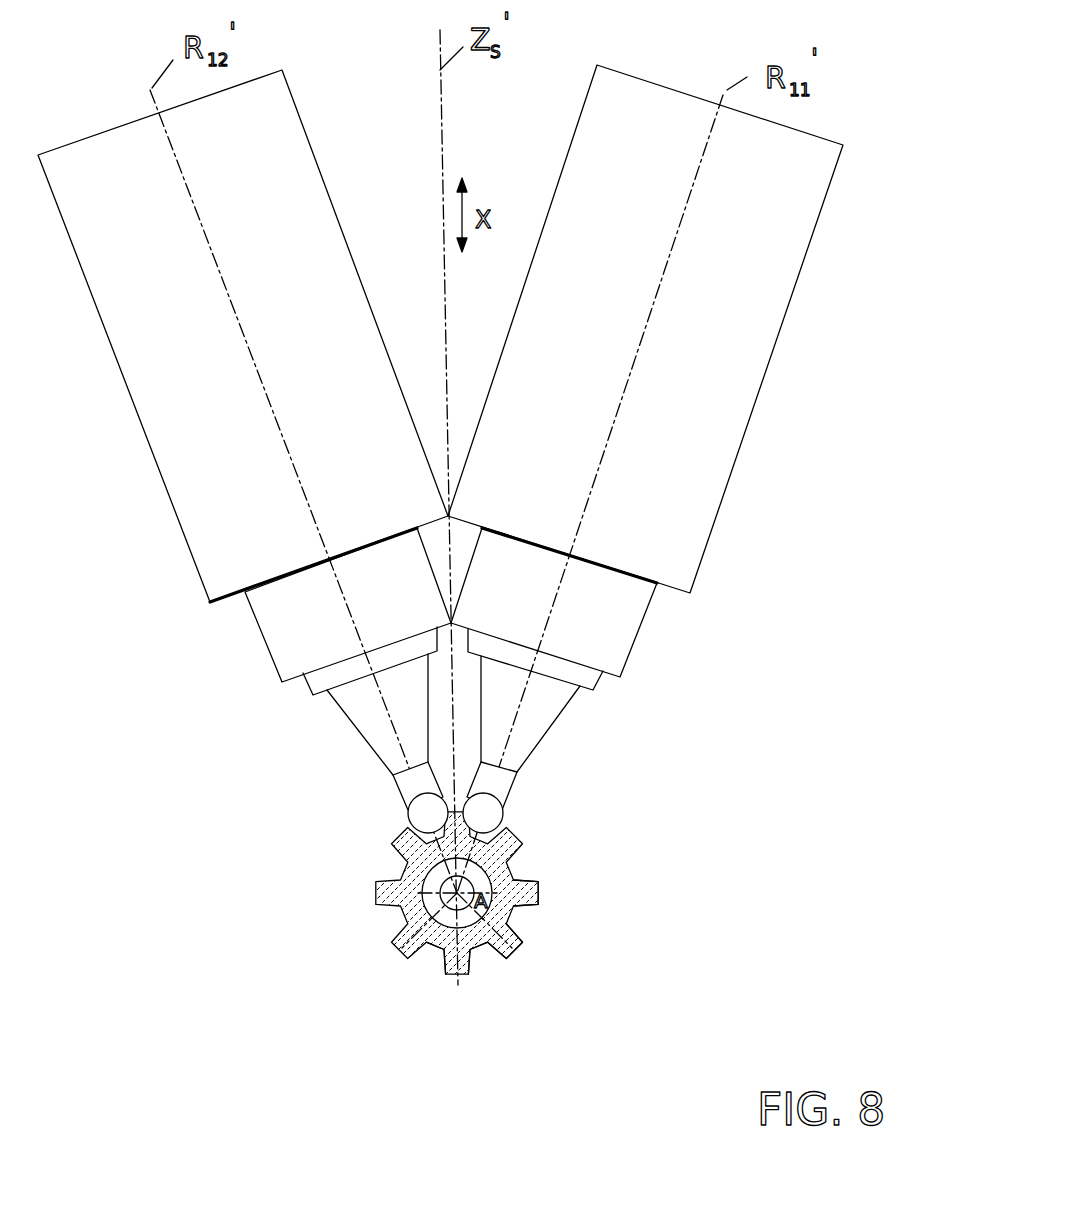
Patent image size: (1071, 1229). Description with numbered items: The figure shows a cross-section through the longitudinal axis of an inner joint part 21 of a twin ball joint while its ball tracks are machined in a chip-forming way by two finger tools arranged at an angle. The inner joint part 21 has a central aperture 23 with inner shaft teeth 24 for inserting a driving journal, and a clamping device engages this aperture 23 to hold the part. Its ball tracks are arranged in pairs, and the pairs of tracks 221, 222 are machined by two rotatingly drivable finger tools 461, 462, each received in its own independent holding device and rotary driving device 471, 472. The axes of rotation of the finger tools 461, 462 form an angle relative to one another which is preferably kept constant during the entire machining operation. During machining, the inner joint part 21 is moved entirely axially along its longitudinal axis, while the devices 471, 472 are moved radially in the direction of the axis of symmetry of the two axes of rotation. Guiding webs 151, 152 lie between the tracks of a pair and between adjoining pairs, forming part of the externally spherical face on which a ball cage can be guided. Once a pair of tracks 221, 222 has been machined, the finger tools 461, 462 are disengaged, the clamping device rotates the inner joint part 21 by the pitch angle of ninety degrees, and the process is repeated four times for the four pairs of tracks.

The holding device and rotary driving device 472 is at (189, 528).
The holding device and rotary driving device 471 is at (722, 520).
The finger tool 462 is at (413, 788).
The finger tool 461 is at (510, 792).
The inner joint part 21 is at (592, 853).
The central aperture 23 is at (427, 882).
The inner shaft teeth 24 is at (427, 908).
The first tooth 151 is at (540, 888).
The second tooth 152 is at (527, 950).
The pair of tracks 221 is at (437, 957).
The pair of tracks 222 is at (487, 953).